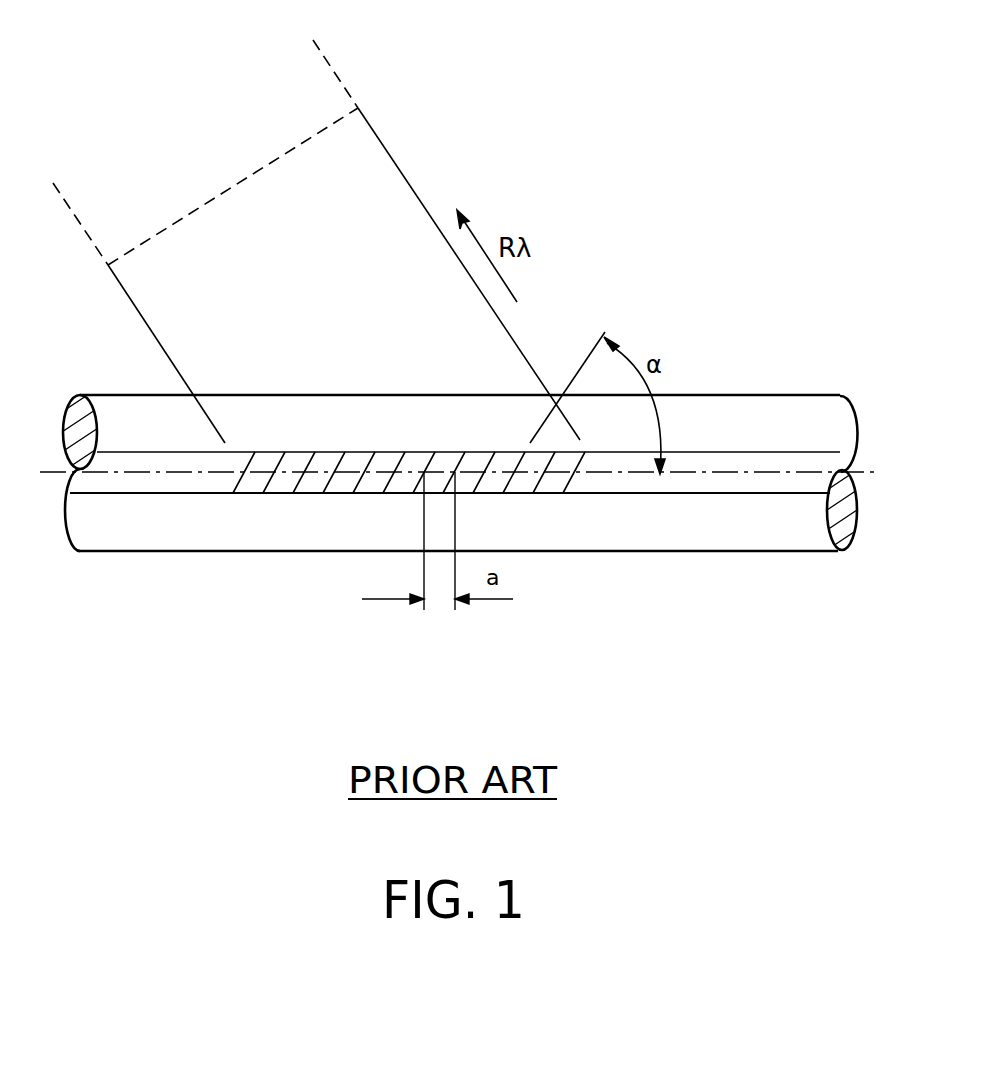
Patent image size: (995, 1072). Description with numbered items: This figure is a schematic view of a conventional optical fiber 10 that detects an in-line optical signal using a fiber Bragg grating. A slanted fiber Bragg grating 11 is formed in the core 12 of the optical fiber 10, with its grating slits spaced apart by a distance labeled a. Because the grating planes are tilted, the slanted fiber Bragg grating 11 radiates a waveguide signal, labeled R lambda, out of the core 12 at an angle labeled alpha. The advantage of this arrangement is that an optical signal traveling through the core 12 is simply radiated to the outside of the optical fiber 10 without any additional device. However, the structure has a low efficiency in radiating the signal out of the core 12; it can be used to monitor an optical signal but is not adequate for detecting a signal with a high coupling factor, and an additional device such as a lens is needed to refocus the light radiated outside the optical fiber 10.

The optical fiber 10 is at (598, 228).
The slanted fiber Bragg grating 11 is at (332, 480).
The core 12 is at (764, 450).